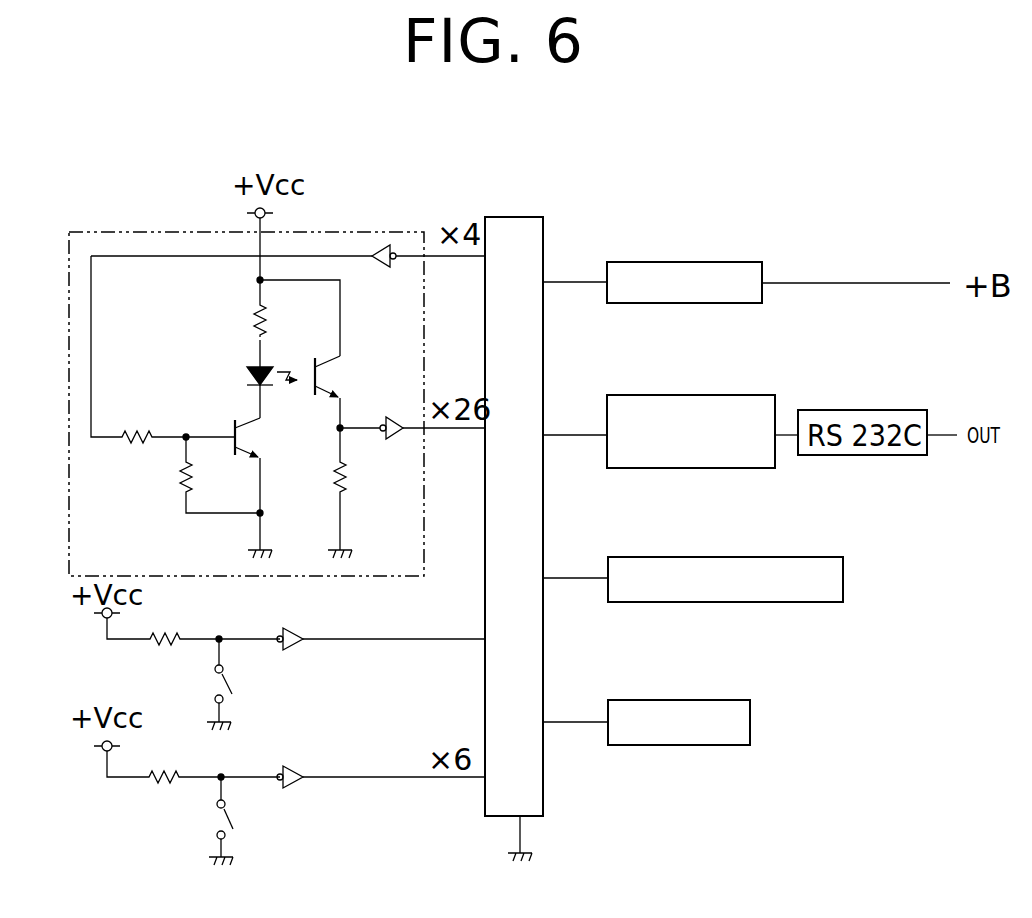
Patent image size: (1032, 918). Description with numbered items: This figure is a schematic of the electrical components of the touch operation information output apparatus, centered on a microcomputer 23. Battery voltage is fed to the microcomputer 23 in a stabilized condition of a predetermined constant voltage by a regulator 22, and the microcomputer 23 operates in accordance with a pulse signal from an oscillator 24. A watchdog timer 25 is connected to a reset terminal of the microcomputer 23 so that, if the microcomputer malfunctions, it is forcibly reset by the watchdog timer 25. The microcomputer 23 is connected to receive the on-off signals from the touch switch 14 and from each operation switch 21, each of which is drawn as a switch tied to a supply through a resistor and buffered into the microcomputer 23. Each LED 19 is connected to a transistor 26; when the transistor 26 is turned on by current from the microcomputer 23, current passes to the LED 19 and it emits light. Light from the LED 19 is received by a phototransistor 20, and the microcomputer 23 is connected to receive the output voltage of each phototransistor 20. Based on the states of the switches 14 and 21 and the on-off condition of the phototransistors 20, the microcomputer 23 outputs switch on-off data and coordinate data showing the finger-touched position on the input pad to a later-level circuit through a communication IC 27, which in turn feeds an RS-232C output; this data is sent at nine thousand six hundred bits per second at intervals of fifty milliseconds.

The touch switch 14 is at (235, 682).
The LED 19 is at (246, 368).
The phototransistor 20 is at (338, 379).
The operation switch 21 is at (232, 818).
The regulator 22 is at (670, 262).
The microcomputer 23 is at (510, 217).
The oscillator 24 is at (685, 700).
The watchdog timer 25 is at (750, 557).
The transistor 26 is at (234, 424).
The communication IC 27 is at (698, 395).